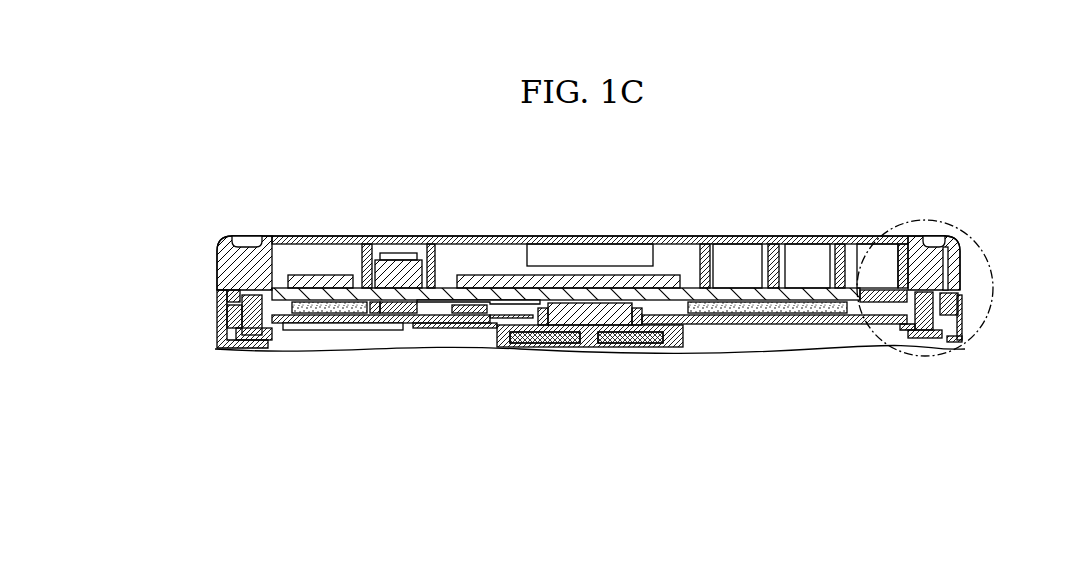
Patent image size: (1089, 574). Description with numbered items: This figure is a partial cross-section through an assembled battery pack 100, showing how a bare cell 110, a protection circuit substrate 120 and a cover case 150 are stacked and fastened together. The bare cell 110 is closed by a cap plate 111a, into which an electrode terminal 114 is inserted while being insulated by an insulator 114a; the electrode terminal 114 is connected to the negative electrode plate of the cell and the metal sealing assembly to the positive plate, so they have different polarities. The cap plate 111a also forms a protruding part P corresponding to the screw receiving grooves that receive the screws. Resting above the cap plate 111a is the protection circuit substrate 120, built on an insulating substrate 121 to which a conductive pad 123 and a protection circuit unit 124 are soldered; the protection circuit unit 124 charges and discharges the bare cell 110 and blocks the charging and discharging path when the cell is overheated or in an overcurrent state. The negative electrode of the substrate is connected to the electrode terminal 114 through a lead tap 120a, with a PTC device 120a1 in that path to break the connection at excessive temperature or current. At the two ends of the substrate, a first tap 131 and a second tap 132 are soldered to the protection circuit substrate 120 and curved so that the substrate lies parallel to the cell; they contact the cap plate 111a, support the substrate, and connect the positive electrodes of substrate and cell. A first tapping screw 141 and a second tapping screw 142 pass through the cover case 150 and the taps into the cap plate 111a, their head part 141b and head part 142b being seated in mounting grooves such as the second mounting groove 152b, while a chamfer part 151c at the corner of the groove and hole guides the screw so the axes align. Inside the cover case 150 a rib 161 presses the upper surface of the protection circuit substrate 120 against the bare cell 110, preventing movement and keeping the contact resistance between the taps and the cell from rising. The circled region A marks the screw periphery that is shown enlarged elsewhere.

The battery pack 100 is at (272, 144).
The bare cell 110 is at (214, 333).
The cap plate 111a is at (745, 326).
The electrode terminal 114 is at (588, 325).
The insulator 114a is at (538, 340).
The protection circuit substrate 120 is at (687, 285).
The lead tap 120a is at (410, 323).
The Positive Temperature Coefficient (PTC) device 120a1 is at (505, 300).
The insulating substrate 121 is at (395, 302).
The conductive pad 123 is at (403, 262).
The protection circuit unit 124 is at (483, 275).
The first tap 131 is at (870, 307).
The second tap 132 is at (260, 318).
The first tapping screw 141 is at (952, 282).
The head part 141b is at (958, 292).
The second tapping screw 142 is at (228, 290).
The head part 142b is at (228, 296).
The cover case 150 is at (768, 233).
The chamfer part 151c is at (962, 307).
The second mounting groove 152b is at (230, 310).
The rib 161 is at (436, 256).
The protruding part P is at (915, 345).
The detail region A is at (960, 228).